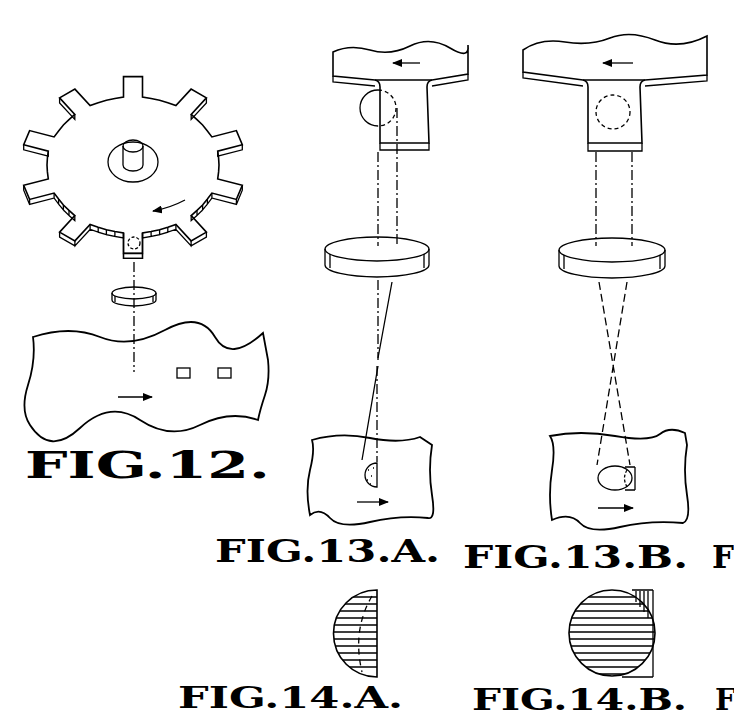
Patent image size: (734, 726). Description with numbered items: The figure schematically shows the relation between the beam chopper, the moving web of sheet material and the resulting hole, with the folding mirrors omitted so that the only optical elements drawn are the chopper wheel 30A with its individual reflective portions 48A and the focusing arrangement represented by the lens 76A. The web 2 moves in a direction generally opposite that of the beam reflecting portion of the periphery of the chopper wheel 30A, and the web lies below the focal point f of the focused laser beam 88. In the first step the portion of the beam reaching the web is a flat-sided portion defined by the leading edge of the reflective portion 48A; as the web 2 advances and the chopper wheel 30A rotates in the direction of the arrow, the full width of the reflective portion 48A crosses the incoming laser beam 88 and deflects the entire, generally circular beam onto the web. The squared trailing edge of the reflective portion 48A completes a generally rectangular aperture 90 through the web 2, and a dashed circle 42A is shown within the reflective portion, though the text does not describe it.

In FIG. 12, the chopper wheel 30A is at (153, 106).
In FIG. 13A, the chopper wheel 30A is at (358, 48).
In FIG. 13B, the chopper wheel 30A is at (555, 42).
In FIG. 12, the reflective portion 48A is at (124, 254).
In FIG. 13A, the reflective portion 48A is at (422, 123).
In FIG. 13B, the reflective portion 48A is at (637, 130).
In FIG. 12, the aperture in tooth 42A is at (146, 250).
In FIG. 12, the lens 76A is at (157, 298).
In FIG. 13A, the lens 76A is at (432, 268).
In FIG. 13B, the lens 76A is at (665, 266).
In FIG. 12, the web 2 is at (58, 332).
In FIG. 13A, the web 2 is at (418, 438).
In FIG. 13B, the web 2 is at (668, 437).
In FIG. 13A, the laser beam 88 is at (376, 188).
In FIG. 13B, the laser beam 88 is at (594, 196).
In FIG. 13A, the focal point f is at (380, 365).
In FIG. 13B, the focal point f is at (618, 373).
In FIG. 13A, the aperture 90 is at (358, 468).
In FIG. 13B, the aperture 90 is at (598, 473).
In FIG. 14A, the aperture 90 is at (372, 637).
In FIG. 14B, the aperture 90 is at (645, 637).